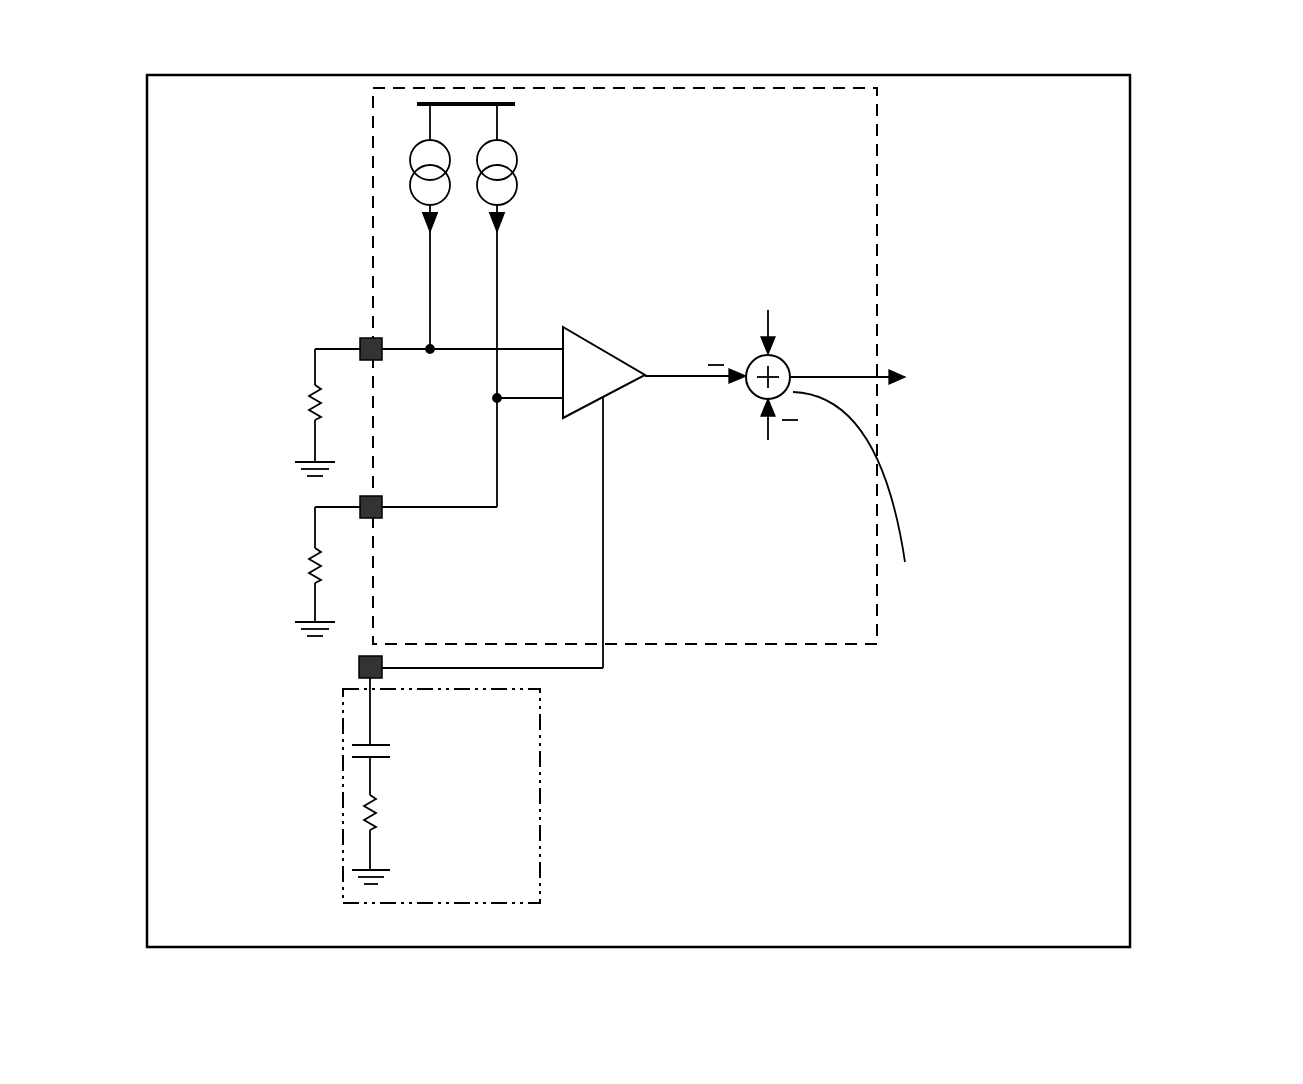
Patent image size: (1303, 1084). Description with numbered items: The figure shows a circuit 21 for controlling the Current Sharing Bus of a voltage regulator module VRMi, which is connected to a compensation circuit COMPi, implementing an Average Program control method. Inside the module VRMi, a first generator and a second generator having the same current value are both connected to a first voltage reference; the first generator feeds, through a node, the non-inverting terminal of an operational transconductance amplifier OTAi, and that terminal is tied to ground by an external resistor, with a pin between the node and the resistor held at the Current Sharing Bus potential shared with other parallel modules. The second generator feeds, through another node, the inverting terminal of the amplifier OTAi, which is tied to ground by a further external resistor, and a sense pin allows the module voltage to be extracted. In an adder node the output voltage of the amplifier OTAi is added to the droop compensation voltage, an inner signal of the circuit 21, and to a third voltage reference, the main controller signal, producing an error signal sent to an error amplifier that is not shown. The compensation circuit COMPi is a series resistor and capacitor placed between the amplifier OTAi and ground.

The control circuit 21 is at (1140, 300).
The voltage regulator module VRMi is at (900, 232).
The compensation circuit COMPi is at (548, 786).
The operational transconductance amplifier OTAi is at (604, 359).